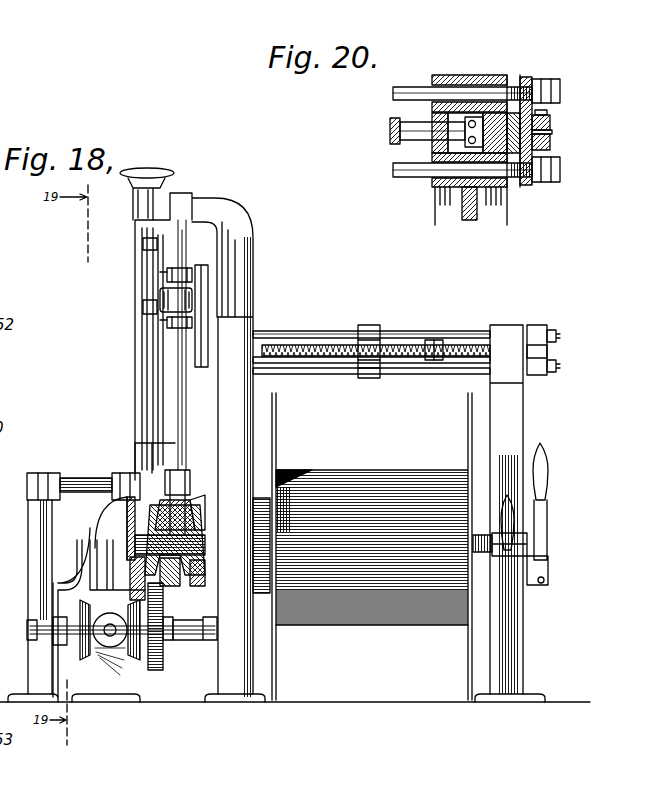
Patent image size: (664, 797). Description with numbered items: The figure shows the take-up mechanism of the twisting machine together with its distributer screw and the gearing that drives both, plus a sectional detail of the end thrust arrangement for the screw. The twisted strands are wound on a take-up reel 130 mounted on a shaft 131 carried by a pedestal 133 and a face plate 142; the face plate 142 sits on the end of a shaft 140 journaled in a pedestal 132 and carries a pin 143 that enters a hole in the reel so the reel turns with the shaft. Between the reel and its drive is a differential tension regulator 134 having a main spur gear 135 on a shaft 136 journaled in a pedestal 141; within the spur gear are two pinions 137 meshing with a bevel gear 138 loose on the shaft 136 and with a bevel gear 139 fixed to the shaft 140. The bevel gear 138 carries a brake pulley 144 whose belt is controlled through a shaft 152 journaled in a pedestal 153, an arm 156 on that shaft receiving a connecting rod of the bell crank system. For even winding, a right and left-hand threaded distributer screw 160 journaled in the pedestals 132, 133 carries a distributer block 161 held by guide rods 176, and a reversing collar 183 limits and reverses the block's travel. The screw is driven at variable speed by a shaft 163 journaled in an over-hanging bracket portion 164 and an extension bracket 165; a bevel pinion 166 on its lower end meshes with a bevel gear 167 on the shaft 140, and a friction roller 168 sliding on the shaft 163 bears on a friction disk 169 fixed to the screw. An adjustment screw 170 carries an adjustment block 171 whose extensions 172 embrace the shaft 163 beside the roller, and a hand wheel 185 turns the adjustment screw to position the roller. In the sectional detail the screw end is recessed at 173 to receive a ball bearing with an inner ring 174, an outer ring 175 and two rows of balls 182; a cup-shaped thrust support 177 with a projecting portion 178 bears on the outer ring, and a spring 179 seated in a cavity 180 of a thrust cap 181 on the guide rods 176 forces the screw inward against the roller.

In FIG. 18, the take-up reel 130 is at (370, 622).
In FIG. 18, the shaft 131 is at (470, 540).
In FIG. 18, the pedestal 132 is at (237, 687).
In FIG. 18, the pedestal 133 is at (512, 687).
In FIG. 18, the differential tension regulator 134 is at (166, 480).
In FIG. 18, the main spur gear 135 is at (163, 595).
In FIG. 18, the shaft 136 is at (128, 546).
In FIG. 18, the pinions 137 is at (170, 580).
In FIG. 18, the bevel gear 138 is at (130, 566).
In FIG. 18, the bevel gear 139 is at (178, 525).
In FIG. 18, the shaft 140 is at (190, 548).
In FIG. 18, the pedestal 141 is at (110, 690).
In FIG. 18, the face plate 142 is at (258, 598).
In FIG. 18, the pin 143 is at (285, 470).
In FIG. 18, the brake pulley 144 is at (130, 592).
In FIG. 18, the shaft 152 is at (90, 494).
In FIG. 18, the pedestal 153 is at (38, 704).
In FIG. 18, the arm 156 is at (53, 477).
In FIG. 18, the distributer screw 160 is at (294, 345).
In FIG. 20, the distributer screw 160 is at (393, 135).
In FIG. 18, the distributer block 161 is at (370, 326).
In FIG. 18, the shaft 163 is at (178, 380).
In FIG. 18, the over-hanging bracket portion 164 is at (208, 222).
In FIG. 18, the extension bracket 165 is at (178, 494).
In FIG. 18, the bevel pinion 166 is at (195, 507).
In FIG. 18, the bevel gear 167 is at (205, 583).
In FIG. 18, the friction roller 168 is at (200, 296).
In FIG. 18, the friction disk 169 is at (205, 305).
In FIG. 18, the adjustment screw 170 is at (148, 357).
In FIG. 18, the adjustment block 171 is at (148, 312).
In FIG. 18, the extensions 172 is at (193, 260).
In FIG. 18, the recessed portion 173 is at (371, 365).
In FIG. 20, the recessed portion 173 is at (472, 150).
In FIG. 20, the inner ring 174 is at (468, 121).
In FIG. 20, the outer ring 175 is at (470, 100).
In FIG. 18, the guide rods 176 is at (477, 328).
In FIG. 20, the guide rods 176 is at (396, 101).
In FIG. 20, the thrust support 177 is at (524, 80).
In FIG. 20, the projecting portion 178 is at (550, 125).
In FIG. 20, the spring 179 is at (548, 116).
In FIG. 20, the cavity 180 is at (548, 146).
In FIG. 18, the thrust cap 181 is at (540, 351).
In FIG. 20, the thrust cap 181 is at (553, 135).
In FIG. 20, the balls 182 is at (483, 95).
In FIG. 18, the reversing collar 183 is at (434, 340).
In FIG. 18, the hand wheel 185 is at (152, 169).